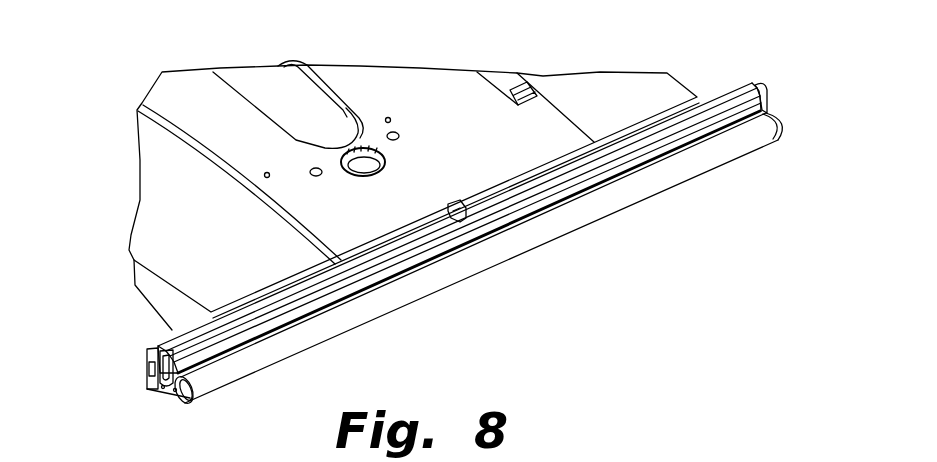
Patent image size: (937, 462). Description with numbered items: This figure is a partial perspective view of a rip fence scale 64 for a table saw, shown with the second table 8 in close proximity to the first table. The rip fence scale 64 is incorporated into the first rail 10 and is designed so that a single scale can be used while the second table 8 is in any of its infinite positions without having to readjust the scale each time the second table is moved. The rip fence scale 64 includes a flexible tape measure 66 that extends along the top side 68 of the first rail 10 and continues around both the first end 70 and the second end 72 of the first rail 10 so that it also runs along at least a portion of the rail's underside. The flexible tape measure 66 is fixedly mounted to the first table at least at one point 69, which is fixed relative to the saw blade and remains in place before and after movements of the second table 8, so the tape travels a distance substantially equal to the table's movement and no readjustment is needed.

The second table 8 is at (611, 101).
The first rail 10 is at (584, 280).
The rip fence scale 64 is at (653, 143).
The flexible tape measure 66 is at (172, 343).
The top side 68 is at (711, 107).
The point 69 is at (463, 221).
The first end 70 is at (150, 375).
The second end 72 is at (768, 97).